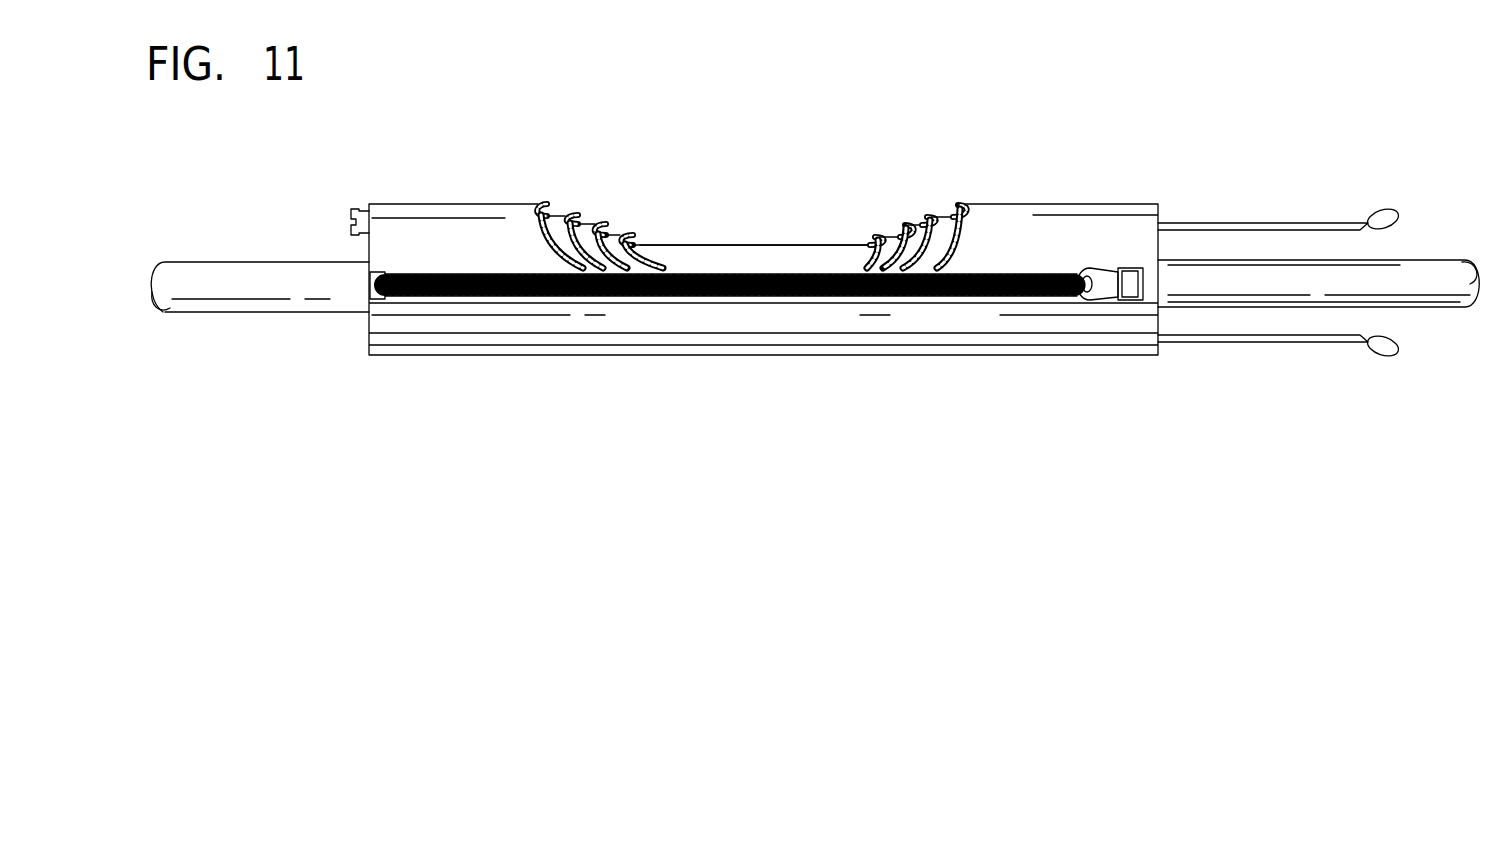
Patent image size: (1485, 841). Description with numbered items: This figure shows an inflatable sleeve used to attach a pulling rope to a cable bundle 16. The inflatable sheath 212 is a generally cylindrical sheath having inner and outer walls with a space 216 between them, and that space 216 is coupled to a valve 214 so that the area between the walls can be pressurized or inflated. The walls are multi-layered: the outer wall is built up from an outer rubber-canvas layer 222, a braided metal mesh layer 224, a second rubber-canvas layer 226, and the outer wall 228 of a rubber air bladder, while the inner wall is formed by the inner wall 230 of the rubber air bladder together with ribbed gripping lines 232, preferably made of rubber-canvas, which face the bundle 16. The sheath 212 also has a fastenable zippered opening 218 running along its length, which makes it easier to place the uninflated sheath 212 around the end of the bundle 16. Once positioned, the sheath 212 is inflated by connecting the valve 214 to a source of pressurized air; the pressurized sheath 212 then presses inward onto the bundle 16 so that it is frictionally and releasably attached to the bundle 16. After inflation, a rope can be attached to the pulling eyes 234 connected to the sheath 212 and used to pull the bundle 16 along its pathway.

The bundle 16 is at (257, 262).
The inflatable sheath 212 is at (822, 372).
The valve 214 is at (348, 220).
The space between the walls 216 is at (652, 245).
The zippered opening 218 is at (1072, 285).
The outer rubber-canvas layer 222 is at (541, 206).
The braided metal mesh layer 224 is at (571, 216).
The second rubber-canvas layer 226 is at (599, 226).
The outer wall of the rubber air bladder 228 is at (627, 238).
The inner wall of the rubber air bladder 230 is at (887, 238).
The ribbed gripping lines 232 is at (780, 245).
The pulling eyes 234 is at (1372, 210).